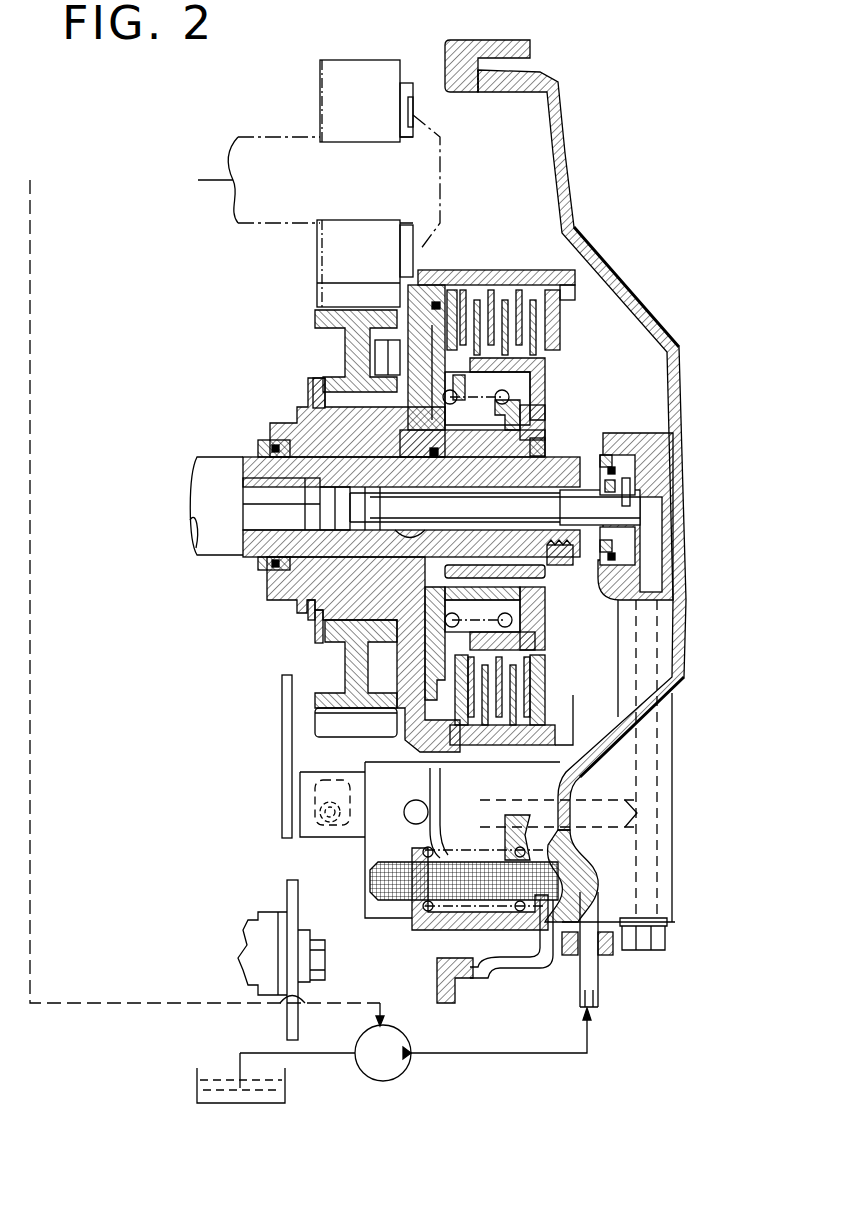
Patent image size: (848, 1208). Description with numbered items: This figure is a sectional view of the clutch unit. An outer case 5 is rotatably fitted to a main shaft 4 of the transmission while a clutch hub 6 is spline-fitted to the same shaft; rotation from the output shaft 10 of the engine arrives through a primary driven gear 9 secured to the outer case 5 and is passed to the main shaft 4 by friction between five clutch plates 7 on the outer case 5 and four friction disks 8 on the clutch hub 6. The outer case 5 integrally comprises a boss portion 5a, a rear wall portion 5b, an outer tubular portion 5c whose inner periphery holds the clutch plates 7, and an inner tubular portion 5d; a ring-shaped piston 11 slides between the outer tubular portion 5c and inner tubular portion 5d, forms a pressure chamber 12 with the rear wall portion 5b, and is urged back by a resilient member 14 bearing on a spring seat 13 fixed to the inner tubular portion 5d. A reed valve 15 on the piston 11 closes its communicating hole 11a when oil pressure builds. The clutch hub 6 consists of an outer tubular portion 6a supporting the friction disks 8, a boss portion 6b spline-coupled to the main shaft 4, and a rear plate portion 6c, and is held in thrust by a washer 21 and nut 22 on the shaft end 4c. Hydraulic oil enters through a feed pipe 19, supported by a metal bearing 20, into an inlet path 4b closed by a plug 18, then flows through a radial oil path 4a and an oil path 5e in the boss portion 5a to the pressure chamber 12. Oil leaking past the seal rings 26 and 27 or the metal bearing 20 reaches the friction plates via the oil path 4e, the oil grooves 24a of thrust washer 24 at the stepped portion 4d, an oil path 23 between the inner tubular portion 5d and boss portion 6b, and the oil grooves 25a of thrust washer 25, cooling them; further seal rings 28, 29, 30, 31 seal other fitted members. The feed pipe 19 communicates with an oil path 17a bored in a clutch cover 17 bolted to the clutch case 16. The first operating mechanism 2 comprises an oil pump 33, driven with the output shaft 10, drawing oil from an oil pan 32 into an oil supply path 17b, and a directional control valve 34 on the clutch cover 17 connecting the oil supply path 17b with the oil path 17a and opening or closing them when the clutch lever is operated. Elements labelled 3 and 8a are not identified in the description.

The first operating mechanism 2 is at (486, 1028).
The bracket 3 is at (300, 848).
The main shaft 4 is at (197, 473).
The oil path 4a is at (372, 472).
The inlet path 4b is at (355, 522).
The end of main shaft 4c is at (580, 490).
The stepped portion 4d is at (414, 540).
The oil path 4e is at (458, 530).
The outer case 5 is at (462, 276).
The boss portion 5a is at (272, 433).
The rear wall portion 5b is at (395, 372).
The outer tubular portion 5c is at (525, 240).
The inner tubular portion 5d is at (462, 436).
The oil path 5e is at (392, 447).
The clutch hub 6 is at (504, 398).
The outer tubular portion 6a is at (540, 660).
The boss portion 6b is at (472, 643).
The rear plate portion 6c is at (540, 642).
The first friction plates 7 is at (523, 300).
The second friction plates 8 is at (480, 360).
The clutch plates 8a is at (548, 345).
The primary driven gear 9 is at (360, 352).
The output shaft 10 is at (275, 137).
The piston 11 is at (451, 290).
The communicating hole 11a is at (388, 357).
The pressure chamber 12 is at (434, 332).
The spring seat 13 is at (545, 372).
The resilient member 14 is at (512, 620).
The reed valve 15 is at (431, 293).
The clutch case 16 is at (517, 41).
The clutch cover 17 is at (560, 157).
The oil path 17a is at (650, 567).
The oil supply path 17b is at (585, 855).
The plug 18 is at (325, 522).
The feed pipe 19 is at (643, 518).
The metal bearing 20 is at (386, 520).
The washer 21 is at (563, 567).
The nut 22 is at (591, 596).
The oil path 23 is at (522, 585).
The thrust washer 24 is at (455, 458).
The oil grooves 24a is at (430, 470).
The thrust washer 25 is at (546, 420).
The oil grooves 25a is at (546, 443).
The seal ring 26 is at (275, 572).
The seal ring 27 is at (445, 570).
The seal ring 28 is at (440, 442).
The seal ring 29 is at (432, 193).
The seal ring 30 is at (600, 462).
The seal ring 31 is at (630, 488).
The oil pan 32 is at (285, 1082).
The oil pump 33 is at (403, 1030).
The directional control valve 34 is at (383, 918).